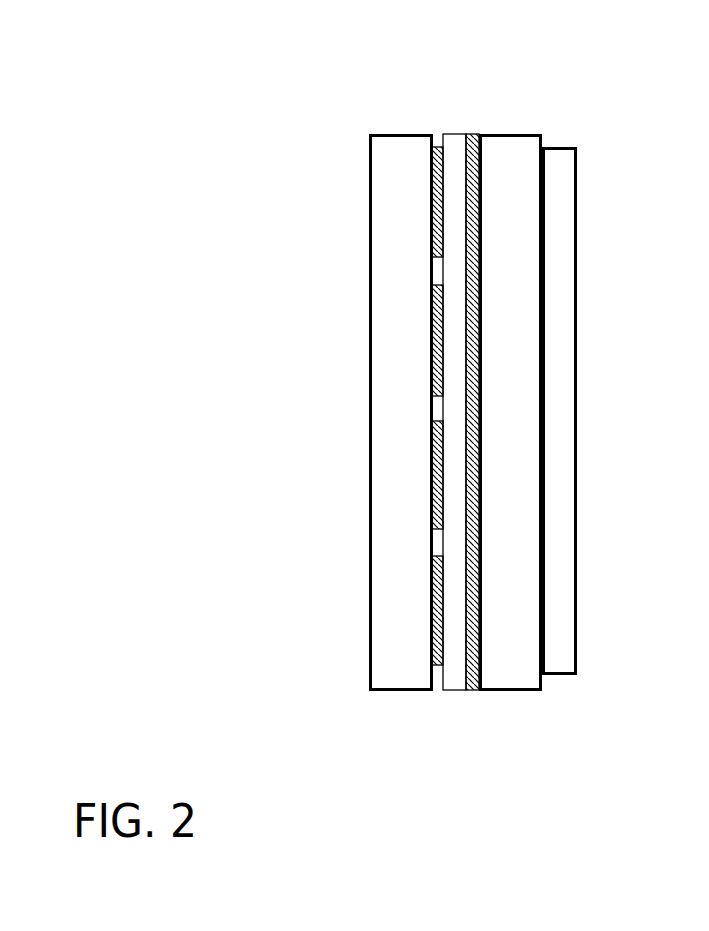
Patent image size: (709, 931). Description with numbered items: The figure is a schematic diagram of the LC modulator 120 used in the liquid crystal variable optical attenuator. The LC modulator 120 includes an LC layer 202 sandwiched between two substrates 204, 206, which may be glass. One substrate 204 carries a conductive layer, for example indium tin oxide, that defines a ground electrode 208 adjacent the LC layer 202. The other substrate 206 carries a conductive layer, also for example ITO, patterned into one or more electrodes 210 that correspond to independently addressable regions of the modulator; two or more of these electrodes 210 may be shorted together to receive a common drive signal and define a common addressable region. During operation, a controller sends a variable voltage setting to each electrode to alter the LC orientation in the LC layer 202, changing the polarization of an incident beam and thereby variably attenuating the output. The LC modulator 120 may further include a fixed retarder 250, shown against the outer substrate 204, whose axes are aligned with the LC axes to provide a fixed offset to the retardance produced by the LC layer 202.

The LC modulator 120 is at (240, 115).
The LC layer 202 is at (455, 158).
The substrate 204 is at (502, 134).
The substrate 206 is at (405, 134).
The ground electrode 208 is at (470, 688).
The electrodes 210 is at (431, 597).
The fixed retarder 250 is at (565, 147).